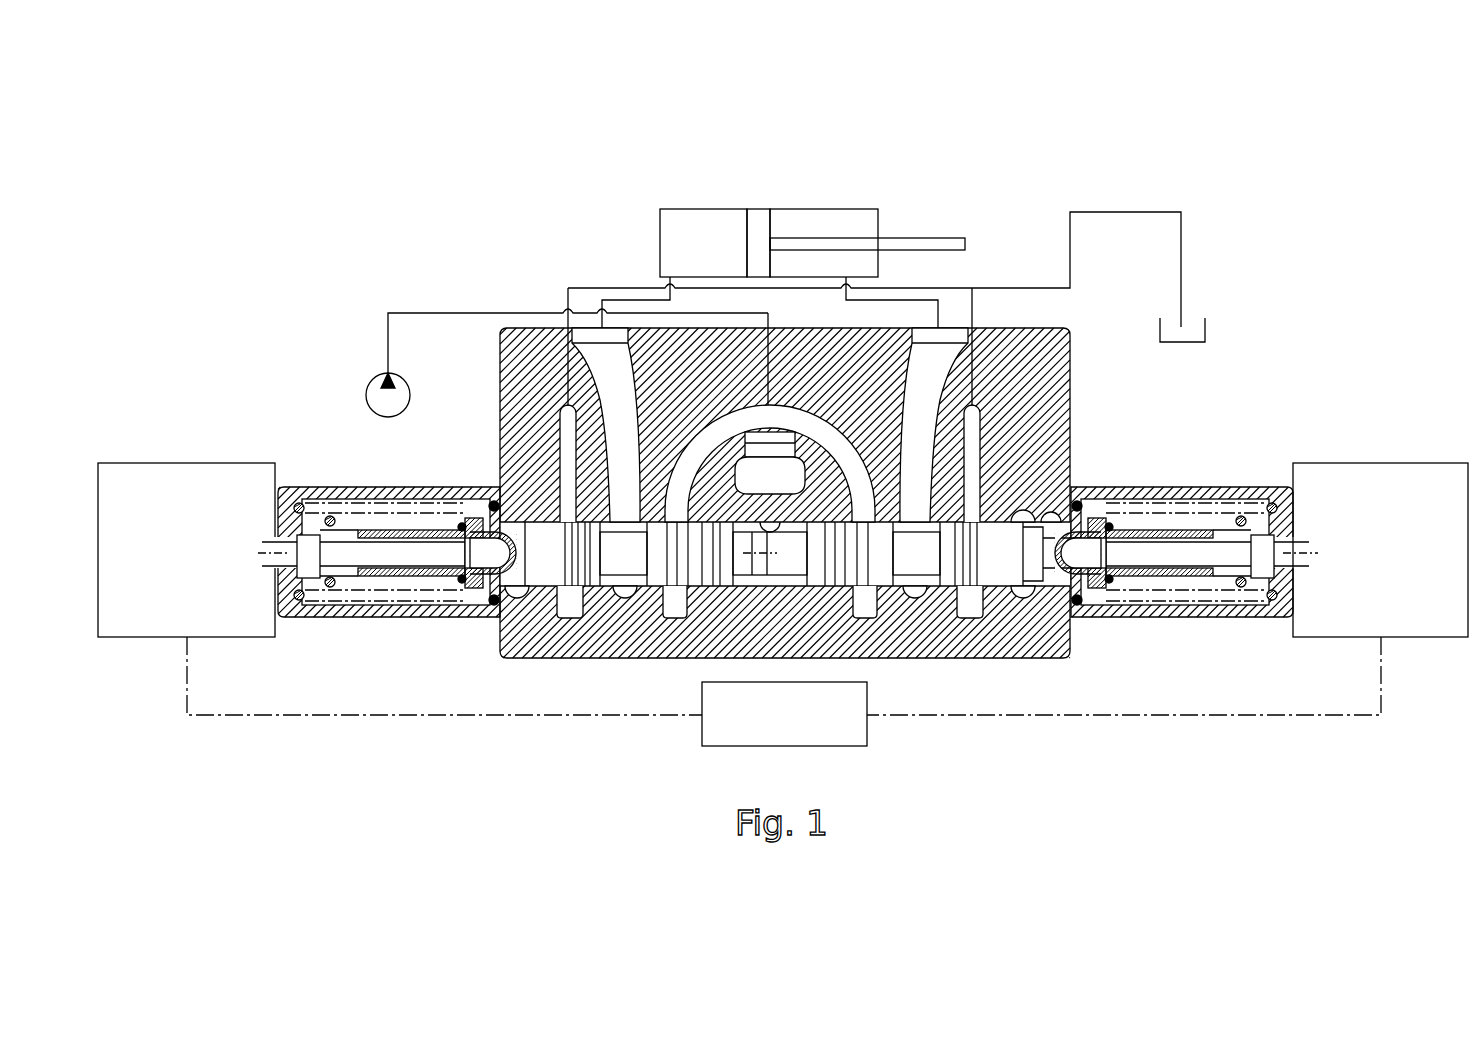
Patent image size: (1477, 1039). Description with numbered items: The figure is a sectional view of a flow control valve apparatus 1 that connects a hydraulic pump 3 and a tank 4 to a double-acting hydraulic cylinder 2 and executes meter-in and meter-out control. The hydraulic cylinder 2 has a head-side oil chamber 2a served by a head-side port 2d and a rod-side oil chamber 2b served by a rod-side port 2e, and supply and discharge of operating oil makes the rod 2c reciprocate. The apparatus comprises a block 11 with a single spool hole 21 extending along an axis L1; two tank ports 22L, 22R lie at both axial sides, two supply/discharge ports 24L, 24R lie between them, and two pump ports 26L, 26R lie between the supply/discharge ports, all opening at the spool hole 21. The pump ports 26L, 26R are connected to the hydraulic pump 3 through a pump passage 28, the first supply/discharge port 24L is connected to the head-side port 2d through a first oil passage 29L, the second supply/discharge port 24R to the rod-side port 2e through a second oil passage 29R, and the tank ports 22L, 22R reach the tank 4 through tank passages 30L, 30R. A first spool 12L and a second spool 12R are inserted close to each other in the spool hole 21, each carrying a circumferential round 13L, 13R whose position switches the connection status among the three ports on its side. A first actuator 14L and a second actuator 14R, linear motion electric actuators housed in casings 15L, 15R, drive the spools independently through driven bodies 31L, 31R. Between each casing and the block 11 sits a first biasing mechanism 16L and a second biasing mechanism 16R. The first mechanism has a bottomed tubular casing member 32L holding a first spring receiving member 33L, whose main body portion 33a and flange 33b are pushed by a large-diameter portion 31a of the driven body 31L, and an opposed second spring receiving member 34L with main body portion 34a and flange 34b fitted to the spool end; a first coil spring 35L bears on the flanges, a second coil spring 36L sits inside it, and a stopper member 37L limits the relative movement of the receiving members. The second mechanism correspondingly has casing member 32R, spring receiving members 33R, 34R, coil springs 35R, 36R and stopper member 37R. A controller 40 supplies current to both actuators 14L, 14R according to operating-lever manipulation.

The flow control valve apparatus 1 is at (1090, 325).
The hydraulic cylinder 2 is at (783, 226).
The head-side oil chamber 2a is at (707, 218).
The rod-side oil chamber 2b is at (858, 222).
The rod 2c is at (803, 245).
The head-side port 2d is at (668, 275).
The rod-side port 2e is at (850, 270).
The hydraulic pump 3 is at (404, 380).
The tank 4 is at (1192, 328).
The block 11 is at (1055, 372).
The first spool 12L is at (720, 586).
The second spool 12R is at (812, 586).
The round 13L is at (640, 522).
The round 13R is at (895, 522).
The first actuator 14L is at (400, 544).
The second actuator 14R is at (1167, 544).
The casing 15L is at (195, 475).
The casing 15R is at (1374, 475).
The first biasing mechanism 16L is at (387, 550).
The second biasing mechanism 16R is at (1182, 553).
The spool hole 21 is at (782, 522).
The tank port 22L is at (550, 522).
The tank port 22R is at (1020, 522).
The first supply/discharge port 24L is at (580, 522).
The second supply/discharge port 24R is at (950, 522).
The pump port 26L is at (692, 522).
The pump port 26R is at (794, 522).
The pump passage 28 is at (781, 408).
The first oil passage 29L is at (626, 415).
The second oil passage 29R is at (902, 420).
The tank passage 30L is at (566, 432).
The tank passage 30R is at (976, 440).
The first driven body 31L is at (371, 598).
The second driven body 31R is at (1266, 578).
The large-diameter portion 31a is at (308, 578).
The casing member 32L is at (366, 490).
The casing member 32R is at (1200, 490).
The first spring receiving member 33L is at (317, 505).
The spring receiving member 33R is at (1272, 502).
The main body portion 33a is at (330, 515).
The flange 33b is at (299, 502).
The second spring receiving member 34L is at (465, 507).
The spring receiving member 34R is at (1110, 520).
The main body portion 34a is at (462, 520).
The flange 34b is at (493, 500).
The first coil spring 35L is at (484, 600).
The coil spring 35R is at (1092, 600).
The second coil spring 36L is at (455, 586).
The coil spring 36R is at (1112, 586).
The stopper member 37L is at (403, 530).
The stopper member 37R is at (1167, 530).
The controller 40 is at (834, 748).
The axis L1 is at (1310, 550).